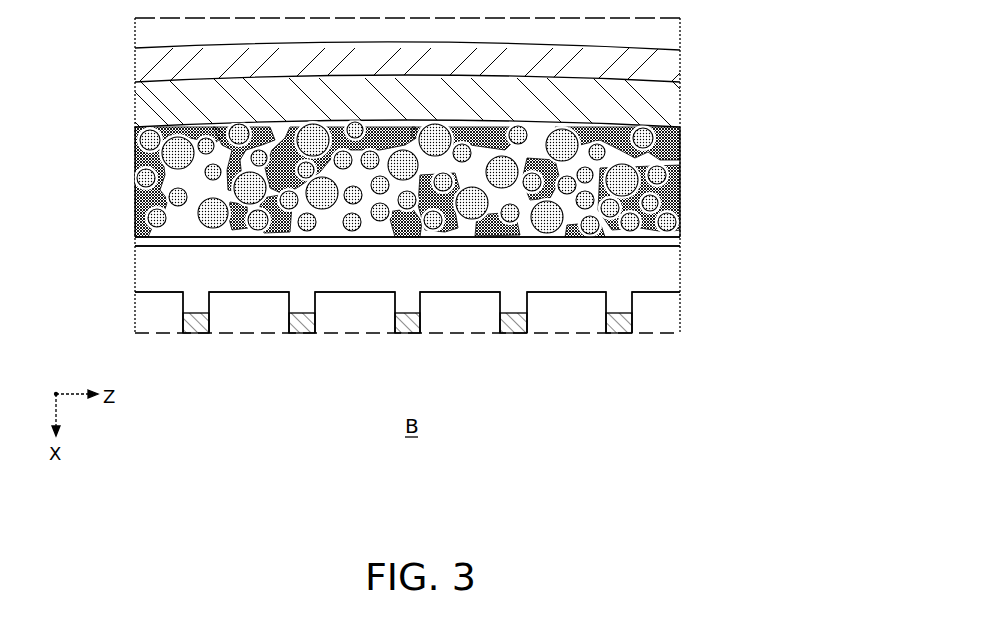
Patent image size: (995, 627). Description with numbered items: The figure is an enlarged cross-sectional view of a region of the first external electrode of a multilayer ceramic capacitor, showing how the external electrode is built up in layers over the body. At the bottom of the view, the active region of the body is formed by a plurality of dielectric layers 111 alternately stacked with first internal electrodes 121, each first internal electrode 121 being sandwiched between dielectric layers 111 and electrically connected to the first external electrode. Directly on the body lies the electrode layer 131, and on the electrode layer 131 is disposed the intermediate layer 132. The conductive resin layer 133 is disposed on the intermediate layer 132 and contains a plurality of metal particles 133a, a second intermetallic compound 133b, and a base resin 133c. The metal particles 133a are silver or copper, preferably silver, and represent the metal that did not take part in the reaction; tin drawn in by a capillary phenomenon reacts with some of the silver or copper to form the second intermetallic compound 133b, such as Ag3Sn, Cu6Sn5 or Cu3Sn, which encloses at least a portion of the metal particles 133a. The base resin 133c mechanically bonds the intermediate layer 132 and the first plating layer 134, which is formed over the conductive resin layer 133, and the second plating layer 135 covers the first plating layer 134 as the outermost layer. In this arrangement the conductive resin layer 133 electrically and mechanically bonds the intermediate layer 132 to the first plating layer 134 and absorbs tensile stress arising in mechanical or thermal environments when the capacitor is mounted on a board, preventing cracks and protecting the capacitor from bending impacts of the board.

The second plating layer 135 is at (668, 60).
The first plating layer 134 is at (668, 100).
The conductive resin layer 133 is at (492, 172).
The metal particles 133a is at (683, 128).
The second intermetallic compound 133b is at (683, 156).
The base resin 133c is at (683, 198).
The intermediate layer 132 is at (670, 240).
The electrode layer 131 is at (667, 278).
The dielectric layer 111 is at (563, 318).
The first internal electrode 121 is at (625, 327).